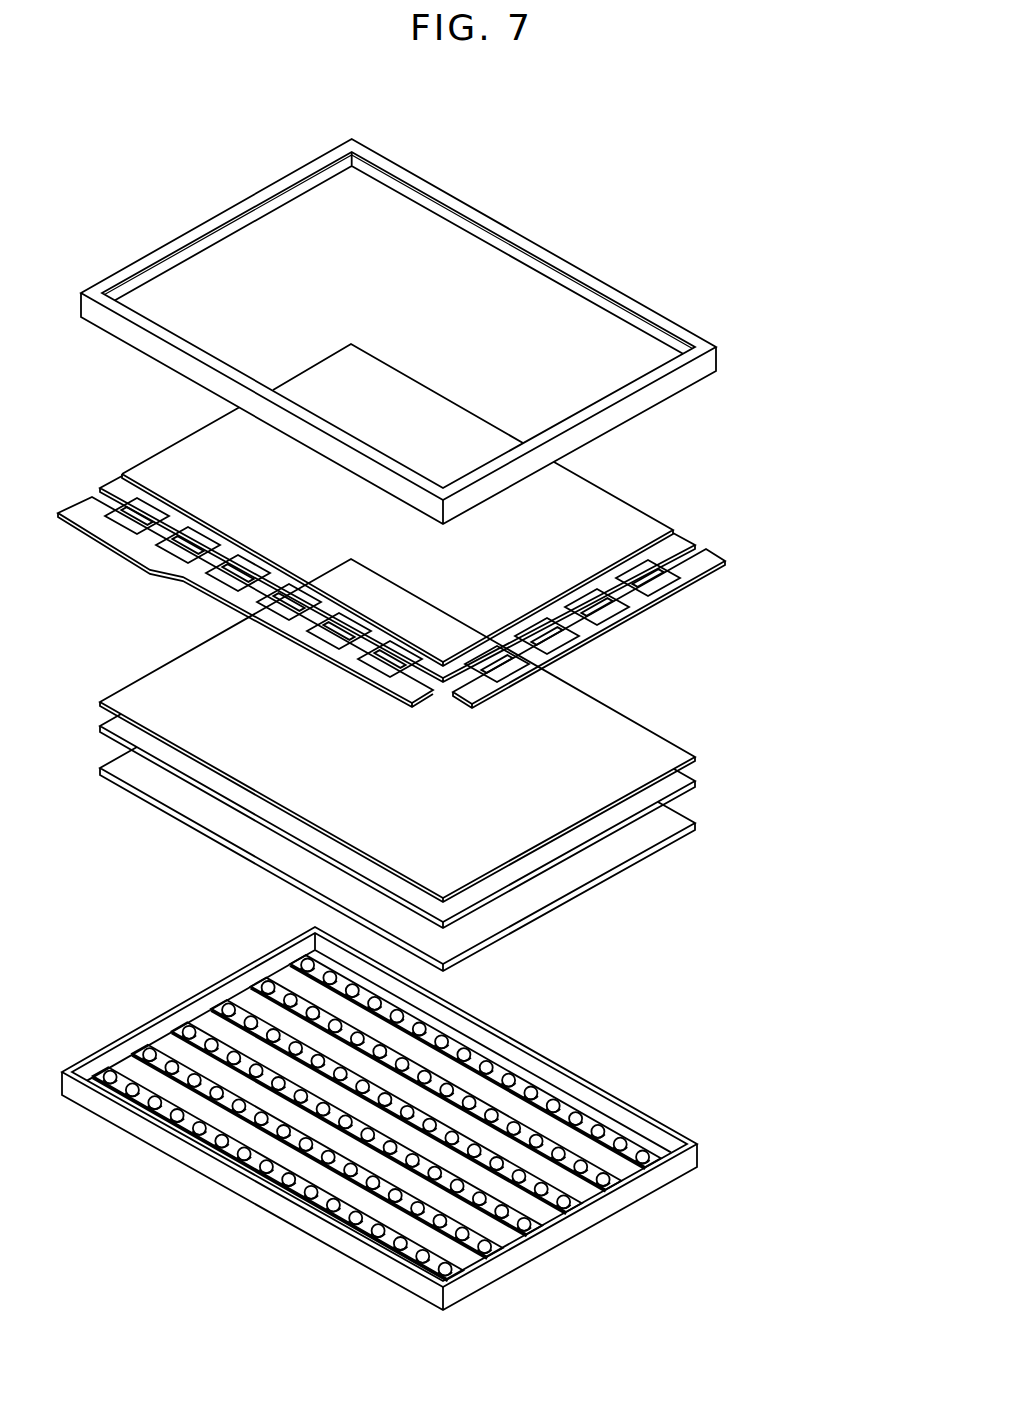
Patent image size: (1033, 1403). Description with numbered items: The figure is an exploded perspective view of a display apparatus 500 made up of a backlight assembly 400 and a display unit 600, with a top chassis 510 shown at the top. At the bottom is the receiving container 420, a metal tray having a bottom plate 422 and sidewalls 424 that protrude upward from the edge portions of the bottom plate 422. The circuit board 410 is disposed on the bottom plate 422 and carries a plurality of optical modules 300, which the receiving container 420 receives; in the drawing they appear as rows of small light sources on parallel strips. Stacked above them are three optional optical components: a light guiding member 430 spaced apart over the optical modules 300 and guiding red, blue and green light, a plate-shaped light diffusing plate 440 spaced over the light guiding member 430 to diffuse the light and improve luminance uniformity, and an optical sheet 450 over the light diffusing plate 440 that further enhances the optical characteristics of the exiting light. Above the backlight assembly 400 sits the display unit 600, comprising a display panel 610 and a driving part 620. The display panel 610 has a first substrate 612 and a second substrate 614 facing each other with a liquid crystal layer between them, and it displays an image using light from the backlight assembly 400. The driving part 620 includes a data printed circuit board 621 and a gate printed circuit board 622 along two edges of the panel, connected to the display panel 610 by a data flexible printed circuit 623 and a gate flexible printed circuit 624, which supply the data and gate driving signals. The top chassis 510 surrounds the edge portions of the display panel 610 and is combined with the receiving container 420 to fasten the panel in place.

The optical module 300 is at (556, 1104).
The backlight assembly 400 is at (462, 943).
The circuit board 410 is at (397, 1118).
The receiving container 420 is at (381, 1119).
The bottom plate 422 is at (465, 1257).
The sidewalls 424 is at (356, 1248).
The light guiding member 430 is at (677, 817).
The light diffusing plate 440 is at (677, 777).
The optical sheet 450 is at (672, 745).
The display apparatus 500 is at (413, 307).
The top chassis 510 is at (648, 276).
The display unit 600 is at (403, 566).
The display panel 610 is at (375, 513).
The first substrate 612 is at (114, 490).
The second substrate 614 is at (163, 462).
The driving part 620 is at (403, 643).
The data printed circuit board 621 is at (128, 552).
The gate printed circuit board 622 is at (636, 600).
The data flexible printed circuit 623 is at (168, 545).
The gate flexible printed circuit 624 is at (665, 580).